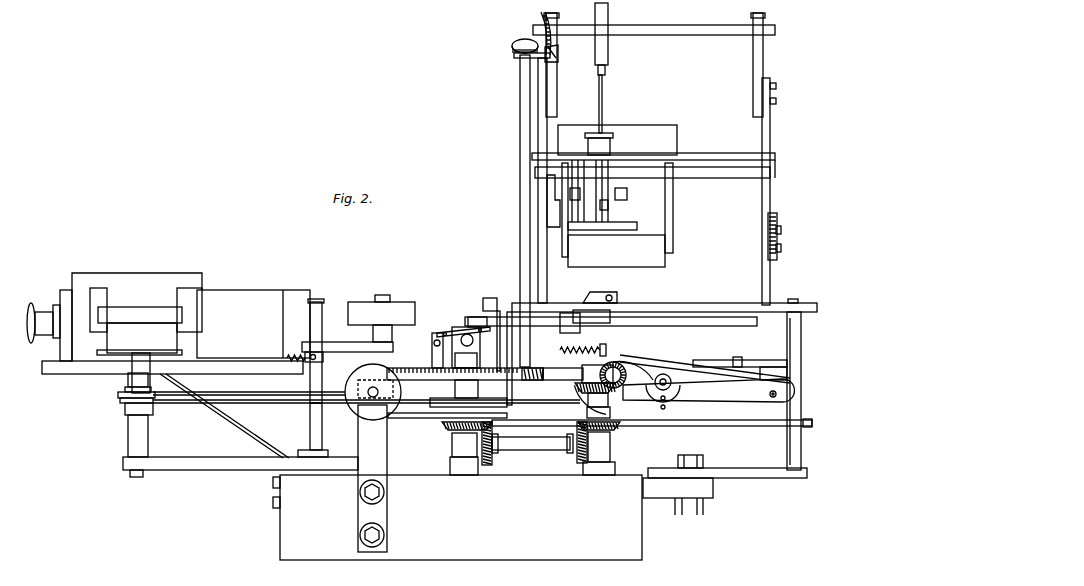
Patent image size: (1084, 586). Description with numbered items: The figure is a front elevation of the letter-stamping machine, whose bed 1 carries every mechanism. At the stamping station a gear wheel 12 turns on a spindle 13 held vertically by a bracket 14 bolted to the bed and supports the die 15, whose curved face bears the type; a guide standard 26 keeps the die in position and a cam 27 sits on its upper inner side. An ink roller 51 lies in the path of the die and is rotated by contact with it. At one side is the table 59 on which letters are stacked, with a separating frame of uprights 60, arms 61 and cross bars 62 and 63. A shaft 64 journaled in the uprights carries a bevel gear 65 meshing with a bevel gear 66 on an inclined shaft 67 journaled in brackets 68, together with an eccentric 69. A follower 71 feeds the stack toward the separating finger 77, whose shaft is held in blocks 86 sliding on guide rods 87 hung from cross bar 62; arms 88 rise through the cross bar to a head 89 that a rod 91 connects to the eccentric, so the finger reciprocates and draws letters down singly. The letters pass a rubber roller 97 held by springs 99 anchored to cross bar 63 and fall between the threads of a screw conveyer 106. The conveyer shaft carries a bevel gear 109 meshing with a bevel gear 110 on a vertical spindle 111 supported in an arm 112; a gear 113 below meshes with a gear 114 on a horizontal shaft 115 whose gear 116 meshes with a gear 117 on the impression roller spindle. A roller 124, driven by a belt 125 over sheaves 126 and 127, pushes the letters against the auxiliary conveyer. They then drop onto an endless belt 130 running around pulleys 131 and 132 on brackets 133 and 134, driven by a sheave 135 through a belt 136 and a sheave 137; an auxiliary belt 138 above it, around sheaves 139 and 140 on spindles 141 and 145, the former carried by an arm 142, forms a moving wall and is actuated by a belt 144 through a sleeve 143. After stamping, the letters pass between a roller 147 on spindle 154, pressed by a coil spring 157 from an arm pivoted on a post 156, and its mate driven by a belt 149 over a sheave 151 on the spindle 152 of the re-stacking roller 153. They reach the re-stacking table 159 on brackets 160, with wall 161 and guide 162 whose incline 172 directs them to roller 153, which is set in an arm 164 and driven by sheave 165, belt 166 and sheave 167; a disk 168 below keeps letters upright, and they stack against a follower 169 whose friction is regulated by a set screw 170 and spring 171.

The bed 1 is at (457, 517).
The gear wheel 12 is at (532, 382).
The spindle 13 is at (452, 450).
The bracket 14 is at (464, 466).
The die 15 is at (447, 367).
The guide standard 26 is at (432, 356).
The cam 27 is at (452, 330).
The ink roller 51 is at (584, 333).
The table 59 is at (741, 191).
The uprights 60 is at (543, 122).
The arms 61 is at (770, 173).
The cross bar 62 is at (653, 150).
The cross bar 63 is at (652, 180).
The shaft 64 is at (654, 22).
The bevel-gear wheel 65 is at (541, 24).
The bevel gear wheel 66 is at (512, 45).
The inclined shaft 67 is at (520, 173).
The brackets 68 is at (558, 56).
The eccentric 69 is at (612, 39).
The follower 71 is at (617, 140).
The separating finger 77 is at (622, 231).
The blocks 86 is at (612, 204).
The guide rods 87 is at (627, 191).
The arms 88 is at (599, 146).
The head 89 is at (613, 137).
The rod 91 is at (610, 104).
The roller 97 is at (652, 257).
The springs 99 is at (602, 201).
The screw conveyer 106 is at (575, 393).
The bevel gear 109 is at (623, 375).
The bevel gear 110 is at (616, 385).
The vertical spindle 111 is at (603, 442).
The arm 112 is at (607, 476).
The gear 113 is at (618, 429).
The gear 114 is at (580, 461).
The horizontal shaft 115 is at (532, 443).
The gear 116 is at (492, 433).
The gear 117 is at (445, 428).
The roller 124 is at (667, 398).
The belt 125 is at (705, 360).
The sheave 126 is at (673, 382).
The sheave 127 is at (575, 389).
The endless belt 130 is at (747, 365).
The pulley 131 is at (773, 374).
The pulley 132 is at (325, 362).
The bracket 133 is at (709, 392).
The bracket 134 is at (373, 458).
The sheave 135 is at (620, 357).
The belt 136 is at (700, 363).
The sheave 137 is at (780, 395).
The auxiliary belt 138 is at (664, 301).
The sheave 139 is at (798, 301).
The sheave 140 is at (500, 296).
The vertical spindle 141 is at (738, 395).
The arm 142 is at (711, 485).
The sleeve 143 is at (801, 372).
The belt 144 is at (652, 432).
The spindle 145 is at (611, 358).
The roller 147 is at (381, 310).
The belt 149 is at (249, 387).
The sheave 151 is at (127, 385).
The spindle 152 is at (126, 446).
The re-stacking roller 153 is at (245, 350).
The spindle 154 is at (392, 334).
The post 156 is at (307, 430).
The coil spring 157 is at (287, 357).
The re-stacking table 159 is at (72, 375).
The brackets 160 is at (238, 431).
The wall 161 is at (66, 290).
The guide 162 is at (253, 324).
The arm 164 is at (240, 474).
The sheave 165 is at (155, 405).
The belt 166 is at (366, 409).
The sheave 167 is at (465, 384).
The disk 168 is at (139, 347).
The follower 169 is at (131, 317).
The set screw 170 is at (44, 336).
The spring 171 is at (51, 303).
The incline 172 is at (195, 292).